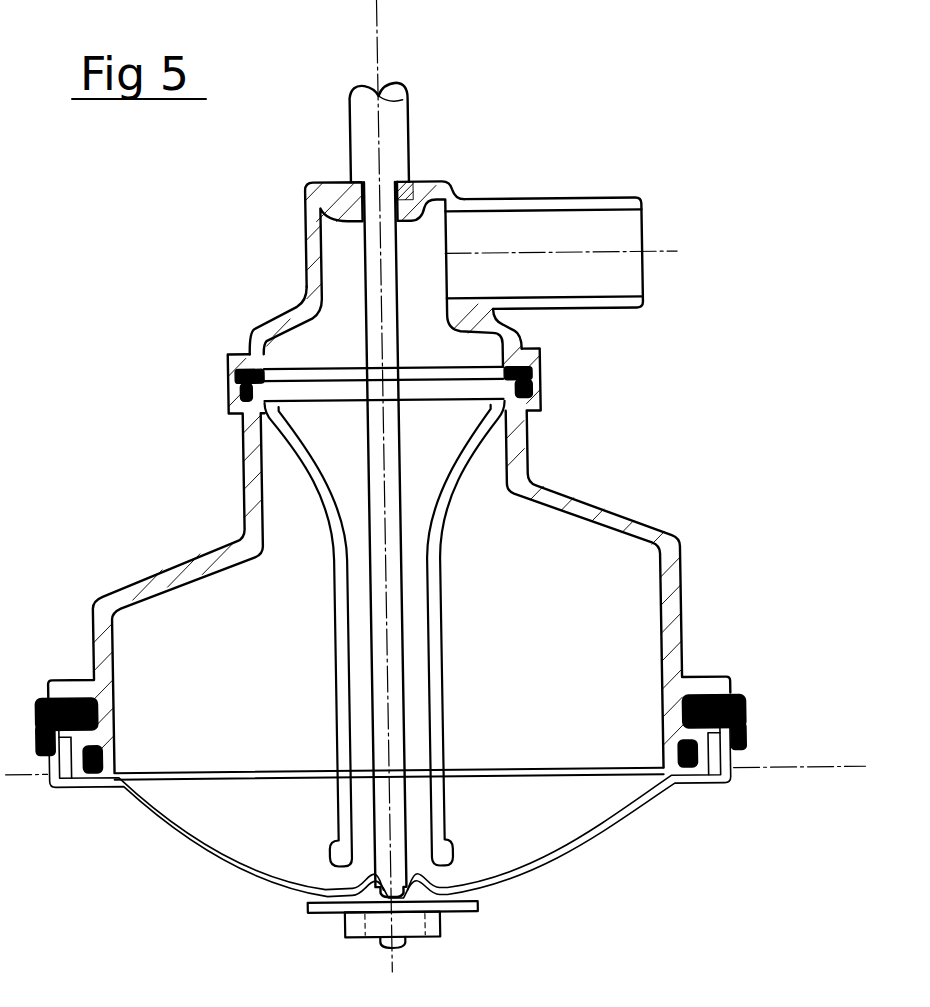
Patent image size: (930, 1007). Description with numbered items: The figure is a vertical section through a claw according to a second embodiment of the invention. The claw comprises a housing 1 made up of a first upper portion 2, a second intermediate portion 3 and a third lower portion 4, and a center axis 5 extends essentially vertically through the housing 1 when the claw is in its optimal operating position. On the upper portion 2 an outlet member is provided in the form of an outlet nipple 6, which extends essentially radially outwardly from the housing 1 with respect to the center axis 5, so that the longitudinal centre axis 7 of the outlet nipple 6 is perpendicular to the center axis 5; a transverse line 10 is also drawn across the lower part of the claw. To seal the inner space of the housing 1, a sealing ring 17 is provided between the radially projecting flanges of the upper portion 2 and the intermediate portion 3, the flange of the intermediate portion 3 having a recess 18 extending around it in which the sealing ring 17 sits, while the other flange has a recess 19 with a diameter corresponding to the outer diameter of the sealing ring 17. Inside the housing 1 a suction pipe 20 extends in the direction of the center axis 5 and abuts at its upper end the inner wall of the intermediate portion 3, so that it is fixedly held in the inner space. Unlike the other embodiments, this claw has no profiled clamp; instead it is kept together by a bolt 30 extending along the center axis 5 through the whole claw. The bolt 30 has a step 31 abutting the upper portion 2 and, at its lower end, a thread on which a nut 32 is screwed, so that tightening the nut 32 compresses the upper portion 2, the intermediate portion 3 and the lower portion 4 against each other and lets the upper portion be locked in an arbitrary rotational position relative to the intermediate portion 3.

The housing 1 is at (592, 507).
The first upper portion 2 is at (312, 290).
The second intermediate portion 3 is at (670, 610).
The third lower portion 4 is at (606, 840).
The center axis 5 is at (378, 48).
The outlet nipple 6 is at (588, 194).
The longitudinal centre axis 7 is at (657, 248).
The transverse axis / plane 10 is at (784, 765).
The sealing ring 17 is at (533, 377).
The recess 18 is at (231, 397).
The recess 19 is at (238, 370).
The suction pipe 20 is at (436, 650).
The bolt 30 is at (394, 123).
The step 31 is at (410, 185).
The nut 32 is at (428, 923).